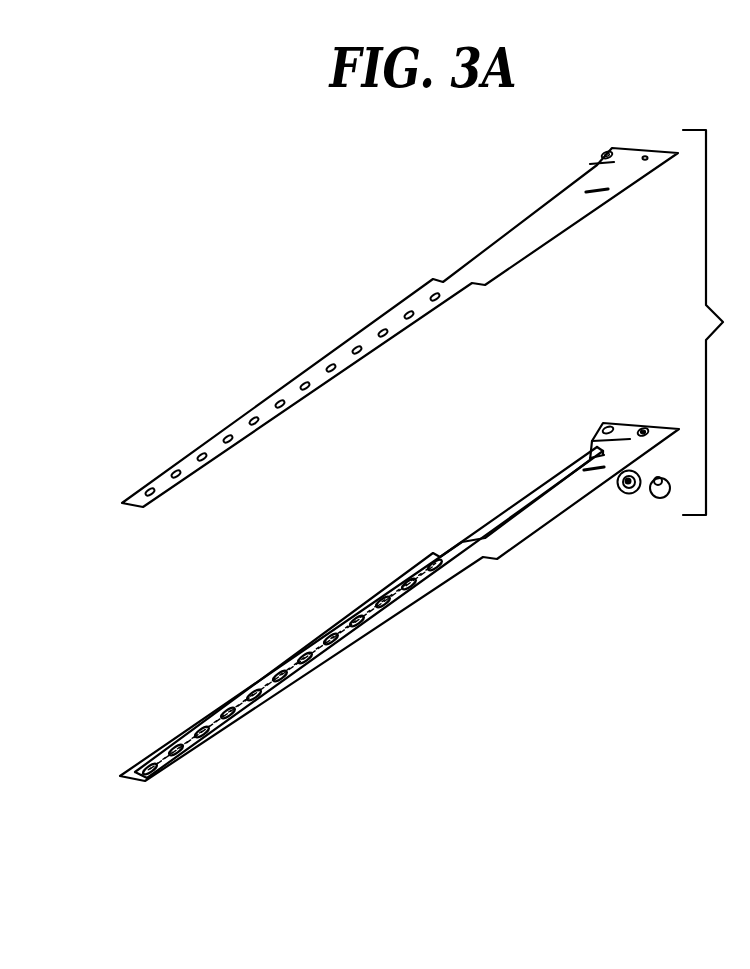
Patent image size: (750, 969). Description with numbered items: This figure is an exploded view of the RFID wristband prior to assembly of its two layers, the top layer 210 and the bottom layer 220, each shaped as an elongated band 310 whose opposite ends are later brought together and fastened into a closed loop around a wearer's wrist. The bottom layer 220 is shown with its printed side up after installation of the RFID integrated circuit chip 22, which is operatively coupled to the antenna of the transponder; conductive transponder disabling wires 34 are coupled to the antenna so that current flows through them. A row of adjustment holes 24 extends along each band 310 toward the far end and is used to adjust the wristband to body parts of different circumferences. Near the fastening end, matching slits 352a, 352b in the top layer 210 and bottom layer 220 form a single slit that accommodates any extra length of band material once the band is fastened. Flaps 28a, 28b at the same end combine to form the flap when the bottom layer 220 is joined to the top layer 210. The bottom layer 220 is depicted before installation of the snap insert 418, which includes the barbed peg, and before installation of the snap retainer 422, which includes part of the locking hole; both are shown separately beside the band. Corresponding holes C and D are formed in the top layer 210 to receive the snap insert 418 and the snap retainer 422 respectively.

The top layer 210 is at (517, 223).
The bottom layer 220 is at (472, 572).
The elongated band 310 is at (484, 262).
The adjustment holes 24 is at (299, 381).
The flap 28a is at (635, 147).
The flap 28b is at (607, 426).
The slit 352a is at (591, 195).
The slit 352b is at (583, 476).
The RFID integrated circuit chip 22 is at (582, 443).
The transponder disabling wires 34 is at (336, 647).
The snap retainer 422 is at (620, 497).
The snap insert 418 is at (652, 497).
The hole C is at (603, 150).
The hole D is at (646, 163).